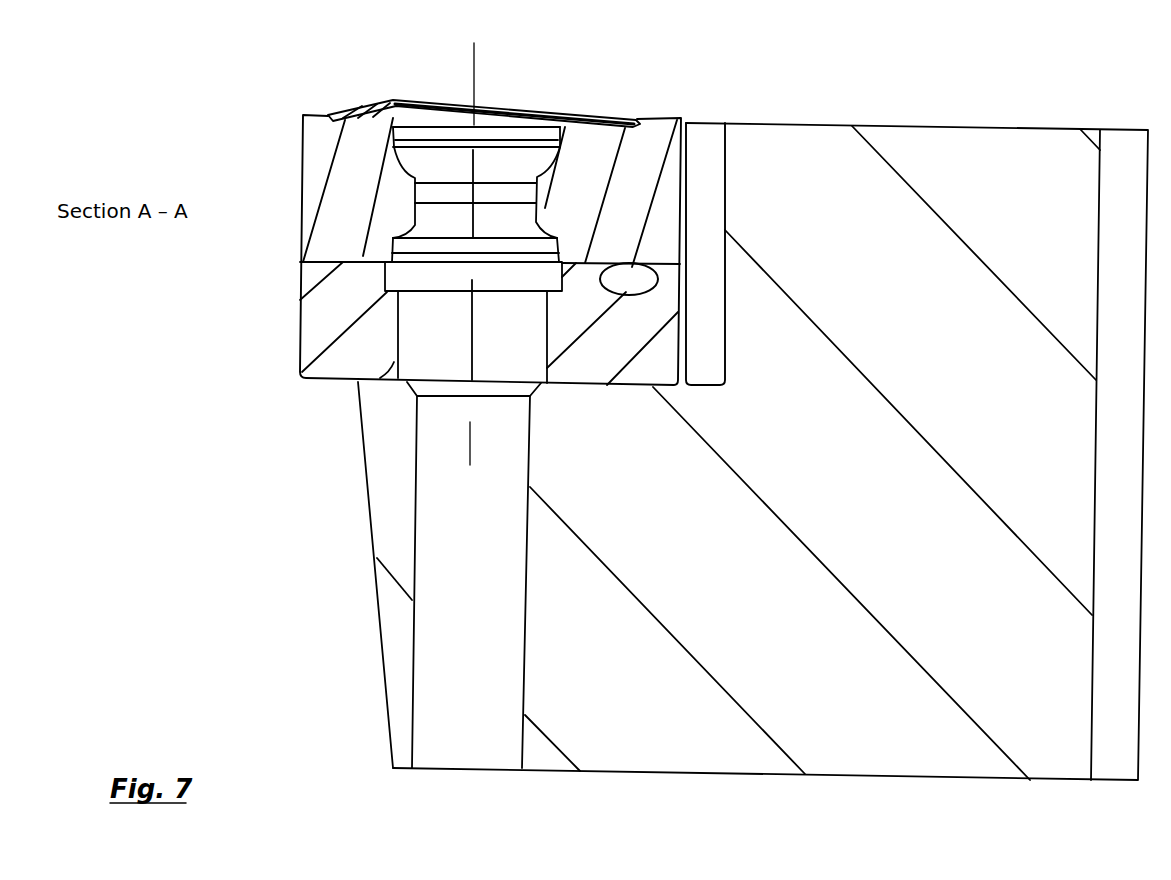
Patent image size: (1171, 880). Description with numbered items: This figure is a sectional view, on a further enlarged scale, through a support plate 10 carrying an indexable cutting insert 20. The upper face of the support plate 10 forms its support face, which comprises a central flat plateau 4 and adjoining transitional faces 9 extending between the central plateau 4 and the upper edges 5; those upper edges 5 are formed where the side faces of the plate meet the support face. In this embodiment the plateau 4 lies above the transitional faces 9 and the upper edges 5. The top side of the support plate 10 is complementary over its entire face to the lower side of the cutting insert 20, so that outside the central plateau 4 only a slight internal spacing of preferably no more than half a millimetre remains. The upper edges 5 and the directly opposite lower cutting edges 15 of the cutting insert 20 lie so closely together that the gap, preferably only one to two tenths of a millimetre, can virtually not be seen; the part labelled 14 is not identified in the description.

The cutting insert 20 is at (302, 154).
The transitional faces 9 is at (325, 260).
The upper edges 5 is at (301, 262).
The support plate 10 is at (301, 361).
The central flat plateau 4 is at (363, 258).
The seal 14 is at (603, 268).
The lower cutting edges 15 is at (684, 296).